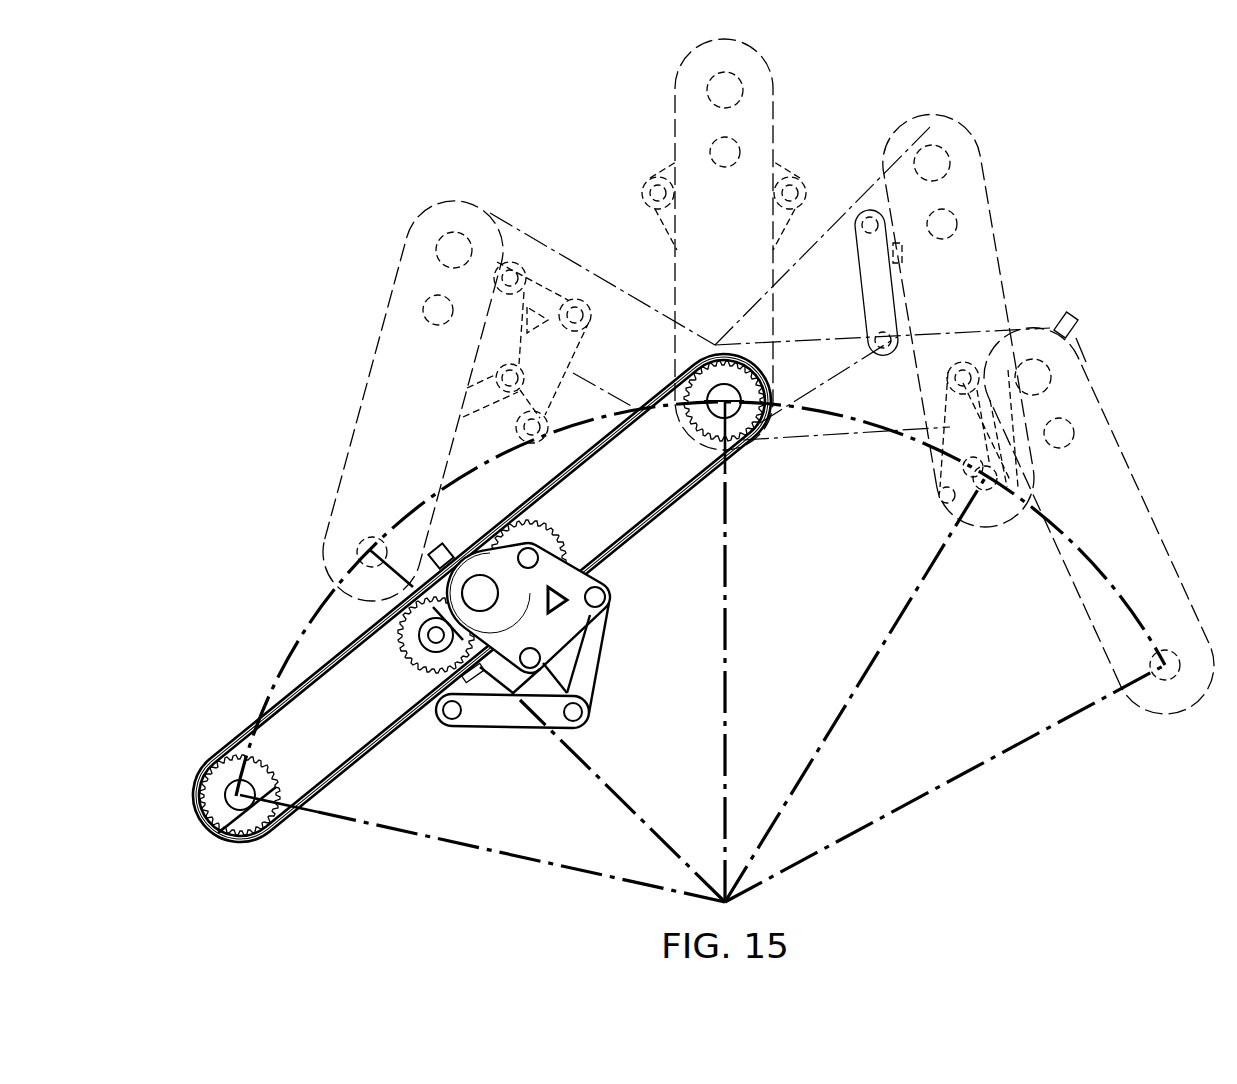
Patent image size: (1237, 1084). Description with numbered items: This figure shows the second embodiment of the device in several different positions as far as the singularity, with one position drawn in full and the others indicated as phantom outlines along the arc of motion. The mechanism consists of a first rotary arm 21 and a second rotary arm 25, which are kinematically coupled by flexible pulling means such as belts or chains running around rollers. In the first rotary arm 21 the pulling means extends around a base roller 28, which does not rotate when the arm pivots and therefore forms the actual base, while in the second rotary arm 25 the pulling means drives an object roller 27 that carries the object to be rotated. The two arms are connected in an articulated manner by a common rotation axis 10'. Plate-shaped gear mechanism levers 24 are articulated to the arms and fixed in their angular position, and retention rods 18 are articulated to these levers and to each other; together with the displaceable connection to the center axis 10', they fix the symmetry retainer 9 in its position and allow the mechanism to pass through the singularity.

The symmetry retainer 9 is at (434, 550).
The common rotation axis 10' is at (469, 553).
The retention rods 18 is at (605, 660).
The first rotary arm 21 is at (586, 521).
The gear mechanism lever 24 is at (599, 626).
The second rotary arm 25 is at (359, 701).
The object roller 27 is at (277, 783).
The base roller 28 is at (697, 430).